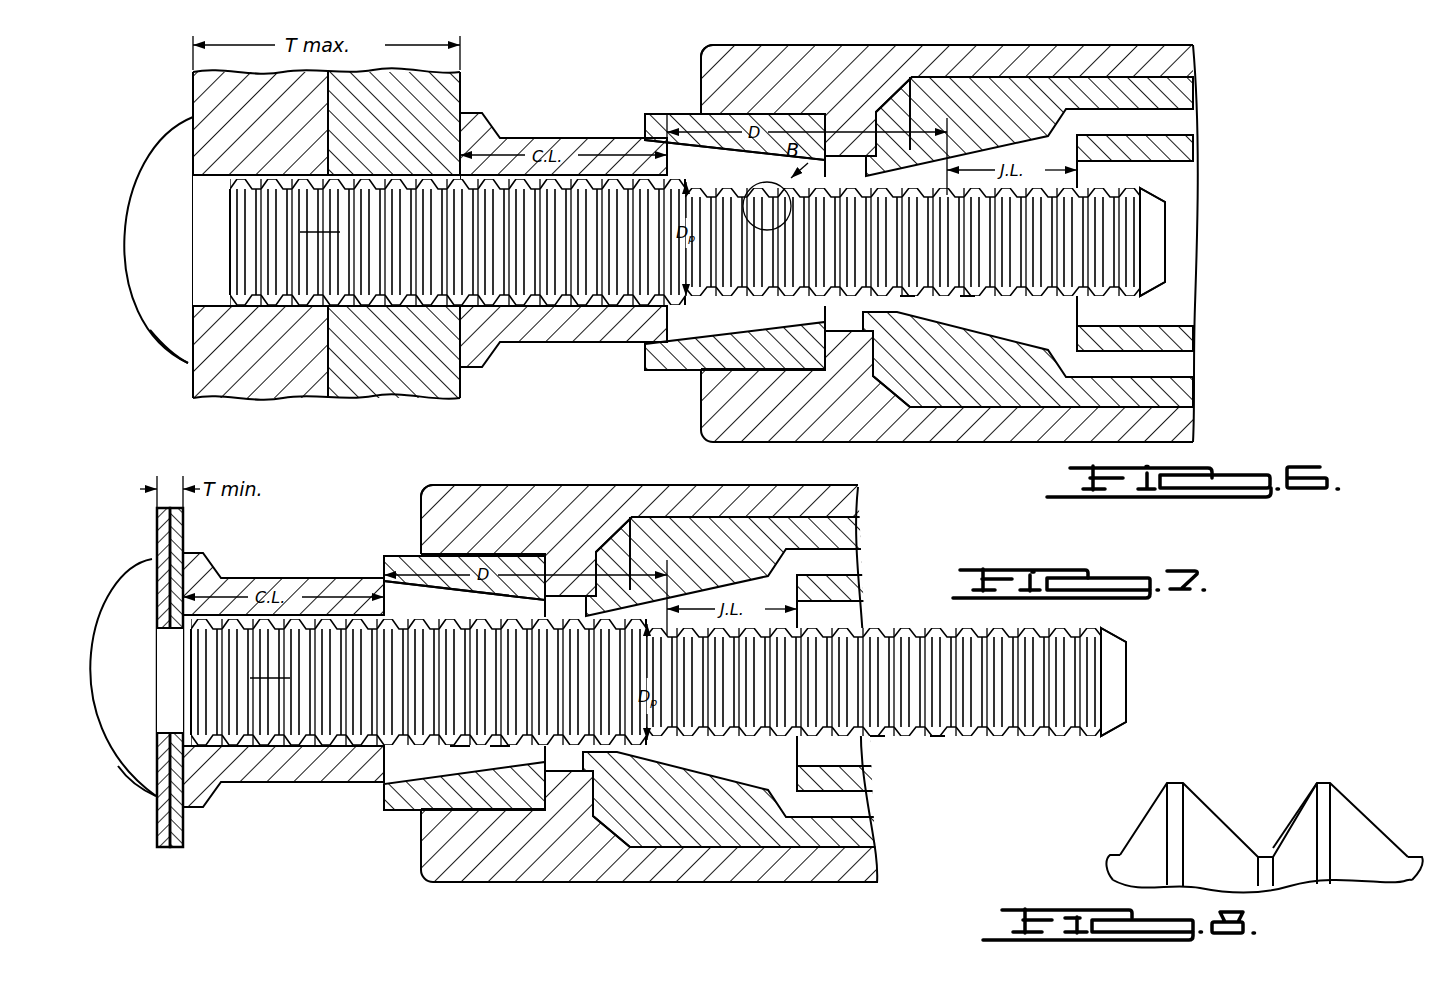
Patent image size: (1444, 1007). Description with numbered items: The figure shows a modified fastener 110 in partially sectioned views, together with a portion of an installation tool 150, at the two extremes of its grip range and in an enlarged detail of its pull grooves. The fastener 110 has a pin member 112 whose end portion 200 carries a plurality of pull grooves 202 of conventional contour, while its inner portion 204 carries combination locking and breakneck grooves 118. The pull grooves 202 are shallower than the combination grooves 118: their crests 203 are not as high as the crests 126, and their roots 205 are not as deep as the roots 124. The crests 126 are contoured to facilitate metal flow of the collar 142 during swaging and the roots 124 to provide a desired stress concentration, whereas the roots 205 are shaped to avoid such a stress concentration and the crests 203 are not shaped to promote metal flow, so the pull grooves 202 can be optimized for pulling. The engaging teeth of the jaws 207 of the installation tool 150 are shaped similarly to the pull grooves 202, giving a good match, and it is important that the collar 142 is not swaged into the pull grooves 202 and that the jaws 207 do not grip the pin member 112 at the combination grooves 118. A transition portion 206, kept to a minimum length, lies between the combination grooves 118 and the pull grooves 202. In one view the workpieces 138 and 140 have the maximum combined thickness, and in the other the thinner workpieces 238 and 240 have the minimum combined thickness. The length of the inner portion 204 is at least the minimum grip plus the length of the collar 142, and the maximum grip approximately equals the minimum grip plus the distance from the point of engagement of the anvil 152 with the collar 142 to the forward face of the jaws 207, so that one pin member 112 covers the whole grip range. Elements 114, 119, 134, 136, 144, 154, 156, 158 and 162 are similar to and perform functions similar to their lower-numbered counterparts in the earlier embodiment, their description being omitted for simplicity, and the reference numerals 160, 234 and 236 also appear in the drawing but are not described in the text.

In FIG. 6, the fastener 110 is at (487, 98).
In FIG. 7, the fastener 110 is at (230, 556).
In FIG. 6, the pin member 112 is at (143, 327).
In FIG. 7, the pin member 112 is at (124, 786).
In FIG. 6, the element 114 is at (158, 153).
In FIG. 7, the element 114 is at (150, 580).
In FIG. 6, the combination locking and breakneck grooves 118 is at (322, 300).
In FIG. 7, the combination locking and breakneck grooves 118 is at (245, 770).
In FIG. 6, the element 119 is at (200, 198).
In FIG. 7, the element 119 is at (168, 640).
In FIG. 6, the roots 124 is at (498, 297).
In FIG. 7, the roots 124 is at (465, 795).
In FIG. 6, the crests 126 is at (538, 298).
In FIG. 7, the crests 126 is at (500, 795).
In FIG. 6, the element 134 is at (212, 308).
In FIG. 6, the element 136 is at (376, 308).
In FIG. 6, the workpiece 138 is at (240, 398).
In FIG. 6, the workpiece 140 is at (402, 398).
In FIG. 6, the collar 142 is at (497, 137).
In FIG. 7, the collar 142 is at (242, 580).
In FIG. 6, the element 144 is at (478, 365).
In FIG. 7, the element 144 is at (200, 808).
In FIG. 6, the installation tool 150 is at (1195, 58).
In FIG. 7, the installation tool 150 is at (601, 487).
In FIG. 6, the anvil 152 is at (665, 114).
In FIG. 7, the anvil 152 is at (384, 555).
In FIG. 6, the element 154 is at (702, 60).
In FIG. 7, the element 154 is at (420, 505).
In FIG. 6, the element 156 is at (650, 336).
In FIG. 7, the element 156 is at (382, 765).
In FIG. 6, the element 158 is at (746, 326).
In FIG. 7, the element 158 is at (455, 765).
In FIG. 6, the collet outer surface 160 is at (712, 116).
In FIG. 7, the collet outer surface 160 is at (355, 590).
In FIG. 6, the element 162 is at (739, 160).
In FIG. 7, the element 162 is at (442, 600).
In FIG. 6, the end portion 200 is at (1163, 258).
In FIG. 7, the end portion 200 is at (1125, 662).
In FIG. 6, the pull grooves 202 is at (1090, 194).
In FIG. 7, the pull grooves 202 is at (891, 624).
In FIG. 8, the pull grooves 202 is at (1260, 838).
In FIG. 6, the crests 203 is at (962, 328).
In FIG. 7, the crests 203 is at (962, 742).
In FIG. 8, the crests 203 is at (1325, 783).
In FIG. 6, the inner portion 204 is at (657, 232).
In FIG. 7, the inner portion 204 is at (625, 678).
In FIG. 6, the roots 205 is at (905, 344).
In FIG. 7, the roots 205 is at (902, 745).
In FIG. 8, the roots 205 is at (1273, 850).
In FIG. 6, the transition portion 206 is at (690, 300).
In FIG. 6, the jaws 207 is at (997, 152).
In FIG. 7, the jaws 207 is at (728, 580).
In FIG. 7, the thin first plate 234 is at (160, 748).
In FIG. 7, the thin second plate 236 is at (182, 750).
In FIG. 7, the workpiece 238 is at (158, 849).
In FIG. 7, the workpiece 240 is at (180, 849).